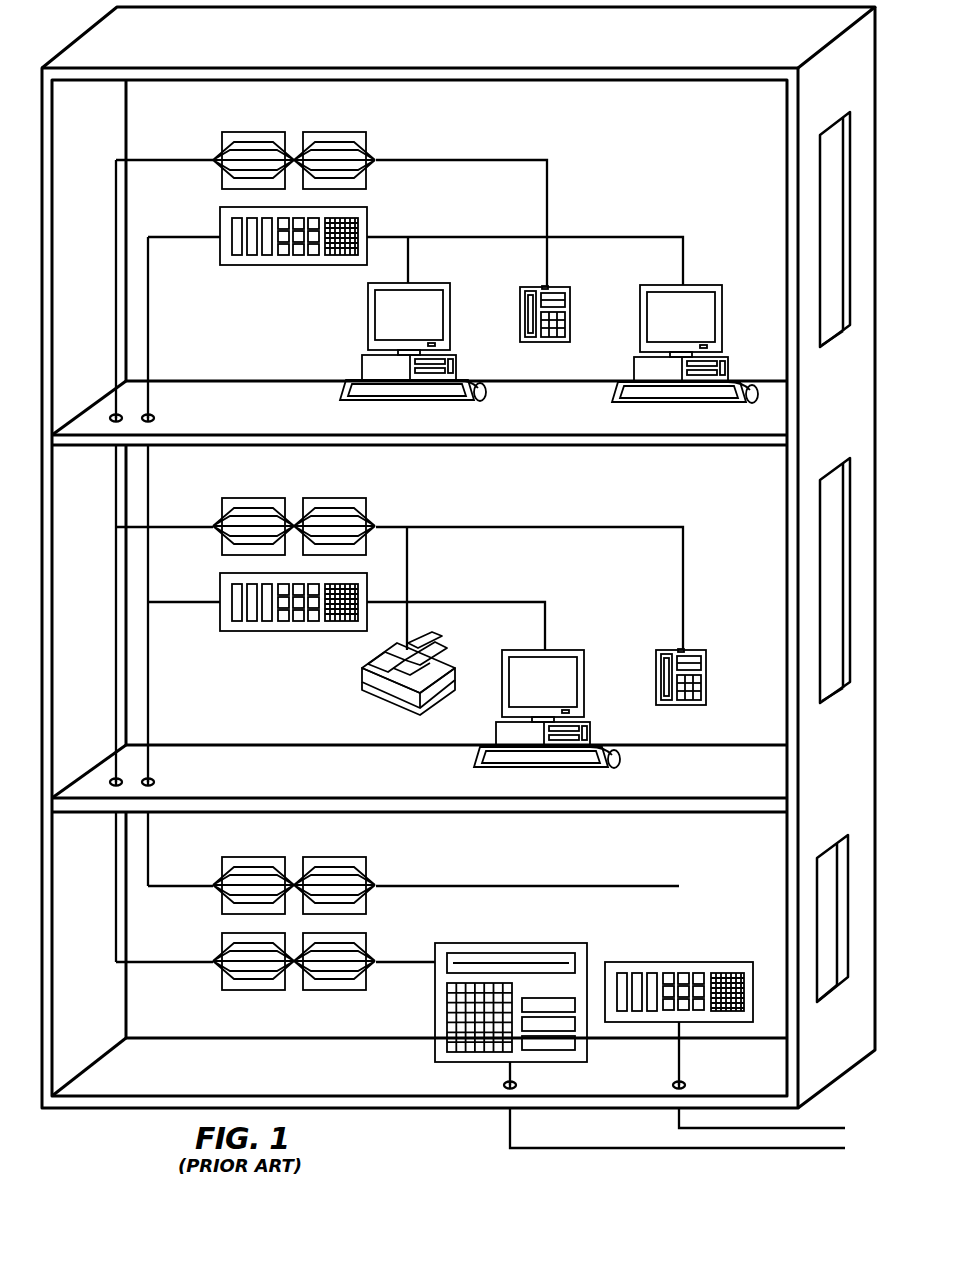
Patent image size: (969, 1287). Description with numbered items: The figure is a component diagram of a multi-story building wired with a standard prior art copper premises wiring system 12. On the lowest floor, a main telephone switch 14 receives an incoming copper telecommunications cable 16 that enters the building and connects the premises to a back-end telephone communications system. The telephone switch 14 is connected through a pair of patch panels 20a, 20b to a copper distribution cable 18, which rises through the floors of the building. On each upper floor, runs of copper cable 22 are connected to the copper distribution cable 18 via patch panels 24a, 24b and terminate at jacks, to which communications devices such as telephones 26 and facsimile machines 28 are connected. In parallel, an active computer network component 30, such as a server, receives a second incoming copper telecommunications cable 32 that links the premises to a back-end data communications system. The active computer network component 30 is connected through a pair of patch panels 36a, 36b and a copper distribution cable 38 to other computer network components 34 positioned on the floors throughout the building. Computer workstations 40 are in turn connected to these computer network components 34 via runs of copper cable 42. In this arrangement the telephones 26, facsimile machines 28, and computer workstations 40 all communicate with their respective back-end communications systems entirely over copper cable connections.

The copper premises wiring system 12 is at (628, 190).
The main telephone switch 14 is at (433, 1010).
The incoming copper telecommunications cable 16 is at (508, 1130).
The copper distribution cable 18 is at (162, 961).
The patch panel 20a is at (218, 978).
The patch panel 20b is at (368, 984).
The runs of copper cable 22 is at (478, 159).
The patch panel 24a is at (219, 148).
The patch panel 24b is at (372, 142).
The telephone 26 is at (572, 316).
The facsimile machine 28 is at (388, 704).
The active computer network component 30 is at (648, 962).
The incoming copper telecommunications cable 32 is at (682, 1062).
The computer network component 34 is at (370, 232).
The patch panel 36a is at (218, 870).
The patch panel 36b is at (368, 866).
The copper distribution cable 38 is at (192, 240).
The computer workstation 40 is at (364, 320).
The runs of copper cable 42 is at (686, 262).